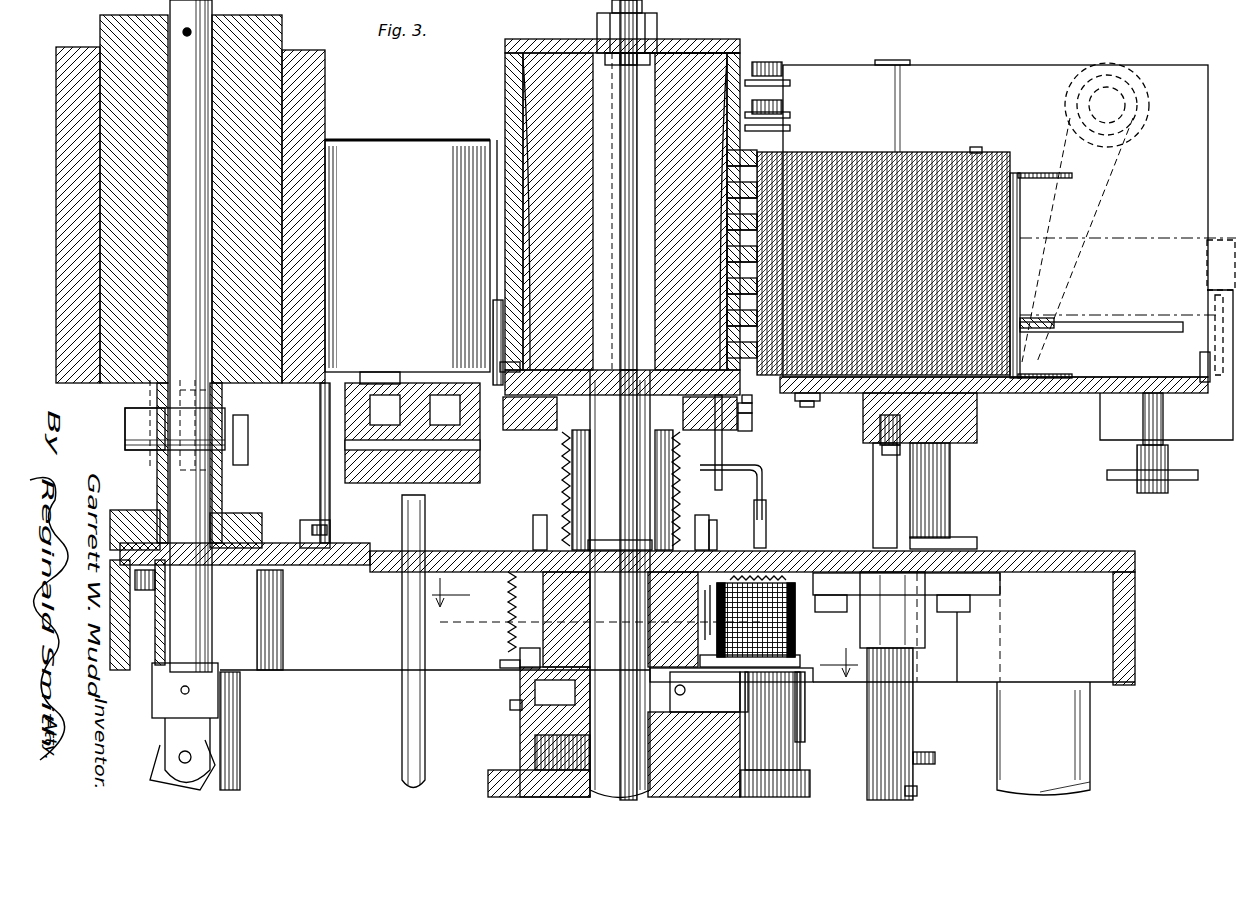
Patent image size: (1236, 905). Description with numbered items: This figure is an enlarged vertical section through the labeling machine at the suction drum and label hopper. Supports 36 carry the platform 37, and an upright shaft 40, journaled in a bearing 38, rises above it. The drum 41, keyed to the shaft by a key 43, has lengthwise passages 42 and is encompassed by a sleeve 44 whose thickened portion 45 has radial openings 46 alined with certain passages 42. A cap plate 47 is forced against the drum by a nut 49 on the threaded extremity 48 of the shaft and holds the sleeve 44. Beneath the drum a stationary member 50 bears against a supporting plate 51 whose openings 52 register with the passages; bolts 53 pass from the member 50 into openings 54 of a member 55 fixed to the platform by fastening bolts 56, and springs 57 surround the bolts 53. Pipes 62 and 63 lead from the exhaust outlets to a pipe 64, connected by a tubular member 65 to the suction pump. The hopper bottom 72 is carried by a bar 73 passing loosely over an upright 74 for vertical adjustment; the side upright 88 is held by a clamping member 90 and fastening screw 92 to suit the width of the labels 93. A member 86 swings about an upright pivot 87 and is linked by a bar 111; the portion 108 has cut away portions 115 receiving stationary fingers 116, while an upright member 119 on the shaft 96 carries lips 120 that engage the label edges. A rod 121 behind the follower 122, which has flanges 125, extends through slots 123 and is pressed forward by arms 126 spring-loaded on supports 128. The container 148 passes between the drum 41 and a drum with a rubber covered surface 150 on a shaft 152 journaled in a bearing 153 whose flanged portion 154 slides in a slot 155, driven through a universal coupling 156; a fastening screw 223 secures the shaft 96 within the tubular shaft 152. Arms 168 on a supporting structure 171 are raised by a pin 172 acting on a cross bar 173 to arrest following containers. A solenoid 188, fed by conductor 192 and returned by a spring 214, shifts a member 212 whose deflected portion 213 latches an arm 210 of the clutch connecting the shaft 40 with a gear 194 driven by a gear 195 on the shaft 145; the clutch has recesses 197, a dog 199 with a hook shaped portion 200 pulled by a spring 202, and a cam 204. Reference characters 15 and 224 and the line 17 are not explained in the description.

The contact 15 is at (814, 406).
The section line 17 is at (645, 625).
The supports 36 is at (1060, 760).
The platform 37 is at (1072, 556).
The bearing 38 is at (550, 598).
The upright shaft 40 is at (620, 585).
The drum 41 is at (545, 105).
The passages 42 is at (520, 138).
The key 43 is at (618, 205).
The sleeve 44 is at (520, 80).
The thickened portion 45 is at (740, 380).
The radial openings 46 is at (735, 248).
The cap plate 47 is at (710, 45).
The threaded extremity 48 is at (655, 40).
The nut 49 is at (596, 32).
The member 50 is at (752, 428).
The supporting plate 51 is at (754, 412).
The openings 52 is at (510, 368).
The bolts 53 is at (570, 498).
The openings 54 is at (596, 550).
The member 55 is at (717, 535).
The fastening bolts 56 is at (533, 525).
The springs 57 is at (560, 470).
The pipe 62 is at (545, 440).
The pipe 63 is at (722, 456).
The pipe 64 is at (765, 495).
The tubular member 65 is at (768, 528).
The main bottom portion 72 is at (1060, 393).
The bar 73 is at (958, 445).
The upright 74 is at (945, 487).
The member 86 is at (875, 448).
The upright pivot 87 is at (880, 432).
The upright 88 is at (1208, 108).
The clamping member 90 is at (1215, 430).
The fastening screw 92 is at (1160, 476).
The labels 93 is at (975, 148).
The pivot 96 is at (875, 514).
The portion 108 is at (845, 68).
The bar 111 is at (800, 401).
The cut away portions 115 is at (790, 116).
The stationary fingers 116 is at (770, 65).
The upright member 119 is at (118, 33).
The lips 120 is at (790, 84).
The rod 121 is at (1040, 318).
The follower member 122 is at (1015, 238).
The slots 123 is at (1128, 322).
The flanges 125 is at (1035, 173).
The arms 126 is at (1085, 205).
The supports 128 is at (1115, 112).
The shaft 145 is at (790, 745).
The container 148 is at (411, 256).
The rubber covered surface 150 is at (318, 58).
The shaft 152 is at (160, 397).
The bearing 153 is at (222, 520).
The flanged portion 154 is at (135, 515).
The slot 155 is at (345, 560).
The universal coupling 156 is at (215, 758).
The arms 168 is at (350, 428).
The supporting structure 171 is at (398, 372).
The pin 172 is at (402, 712).
The cross bar 173 is at (314, 517).
The electro-responsive device 188 is at (750, 665).
The conductor 192 is at (806, 704).
The gear 194 is at (490, 775).
The gear 195 is at (812, 783).
The recesses 197 is at (522, 750).
The dog 199 is at (555, 692).
The hook shaped portion 200 is at (510, 706).
The spring 202 is at (686, 694).
The cam 204 is at (744, 680).
The arm 210 is at (520, 680).
The member 212 is at (612, 628).
The deflected portion 213 is at (507, 646).
The spring 214 is at (742, 578).
The fastening screw 223 is at (936, 758).
The key 224 is at (245, 448).